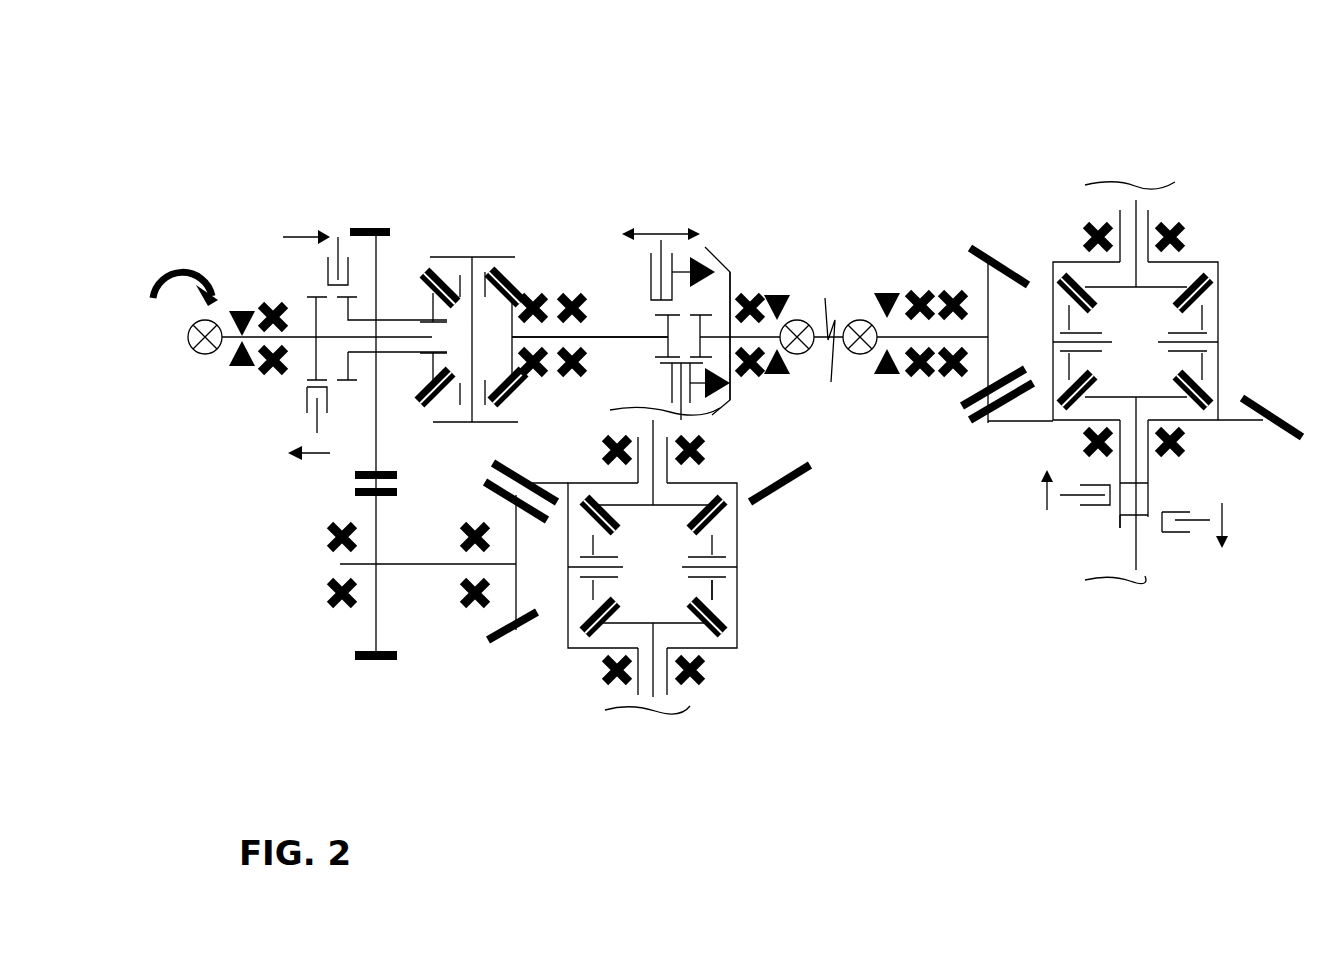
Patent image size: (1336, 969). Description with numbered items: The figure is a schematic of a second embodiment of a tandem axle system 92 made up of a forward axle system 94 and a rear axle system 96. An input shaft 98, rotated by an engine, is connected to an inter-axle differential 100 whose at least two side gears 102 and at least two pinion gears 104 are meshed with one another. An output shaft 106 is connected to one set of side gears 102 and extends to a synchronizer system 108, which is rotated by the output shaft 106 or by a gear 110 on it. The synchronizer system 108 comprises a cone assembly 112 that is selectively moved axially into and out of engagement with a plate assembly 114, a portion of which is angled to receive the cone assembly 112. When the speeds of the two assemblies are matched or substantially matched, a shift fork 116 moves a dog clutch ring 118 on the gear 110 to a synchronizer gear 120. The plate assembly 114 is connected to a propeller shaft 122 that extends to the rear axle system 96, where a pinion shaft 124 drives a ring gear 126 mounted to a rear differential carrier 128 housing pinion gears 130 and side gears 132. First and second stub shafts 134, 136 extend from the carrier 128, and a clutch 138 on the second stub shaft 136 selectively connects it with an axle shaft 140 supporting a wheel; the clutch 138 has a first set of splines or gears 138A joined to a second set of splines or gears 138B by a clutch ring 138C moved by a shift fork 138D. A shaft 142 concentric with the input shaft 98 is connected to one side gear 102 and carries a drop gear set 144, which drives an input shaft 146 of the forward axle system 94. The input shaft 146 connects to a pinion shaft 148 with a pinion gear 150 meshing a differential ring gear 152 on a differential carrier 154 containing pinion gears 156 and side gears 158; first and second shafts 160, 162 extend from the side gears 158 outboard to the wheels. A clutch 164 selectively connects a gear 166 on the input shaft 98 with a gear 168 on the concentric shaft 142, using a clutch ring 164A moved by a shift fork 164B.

The tandem axle system 92 is at (710, 165).
The forward axle system 94 is at (765, 705).
The rear axle system 96 is at (1140, 136).
The input shaft 98 is at (222, 330).
The inter-axle differential 100 is at (474, 232).
The side gears 102 is at (512, 278).
The pinion gears 104 is at (438, 276).
The output shaft 106 is at (617, 336).
The synchronizer system 108 is at (724, 224).
The gear 110 is at (665, 346).
The cone assembly 112 is at (682, 212).
The plate assembly 114 is at (738, 248).
The shift fork 116 is at (712, 408).
The dog clutch ring 118 is at (668, 368).
The synchronizer gear 120 is at (705, 315).
The propeller shaft 122 is at (838, 325).
The pinion shaft 124 is at (988, 337).
The ring gear 126 is at (1018, 424).
The rear differential carrier 128 is at (1219, 313).
The pinion gears 130 is at (1206, 386).
The side gears 132 is at (1200, 400).
The first stub shaft 134 is at (1138, 206).
The second stub shaft 136 is at (1138, 465).
The clutch 138 is at (1055, 548).
The first set of splines or gears 138A is at (1120, 480).
The second set of splines or gears 138B is at (1115, 528).
The clutch ring 138C is at (1180, 535).
The shift fork 138D is at (1068, 497).
The axle shaft 140 is at (1160, 568).
The concentric shaft 142 is at (401, 320).
The drop gear set 144 is at (332, 488).
The input shaft 146 is at (413, 566).
The pinion shaft 148 is at (516, 566).
The pinion gear 150 is at (505, 640).
The differential ring gear 152 is at (805, 480).
The differential carrier 154 is at (738, 605).
The pinion gears 156 is at (714, 624).
The side gears 158 is at (712, 628).
The first shaft 160 is at (655, 472).
The second shaft 162 is at (652, 695).
The clutch 164 is at (312, 212).
The clutch ring 164A is at (305, 394).
The shift fork 164B is at (315, 430).
The gear 166 is at (314, 295).
The gear 168 is at (351, 382).